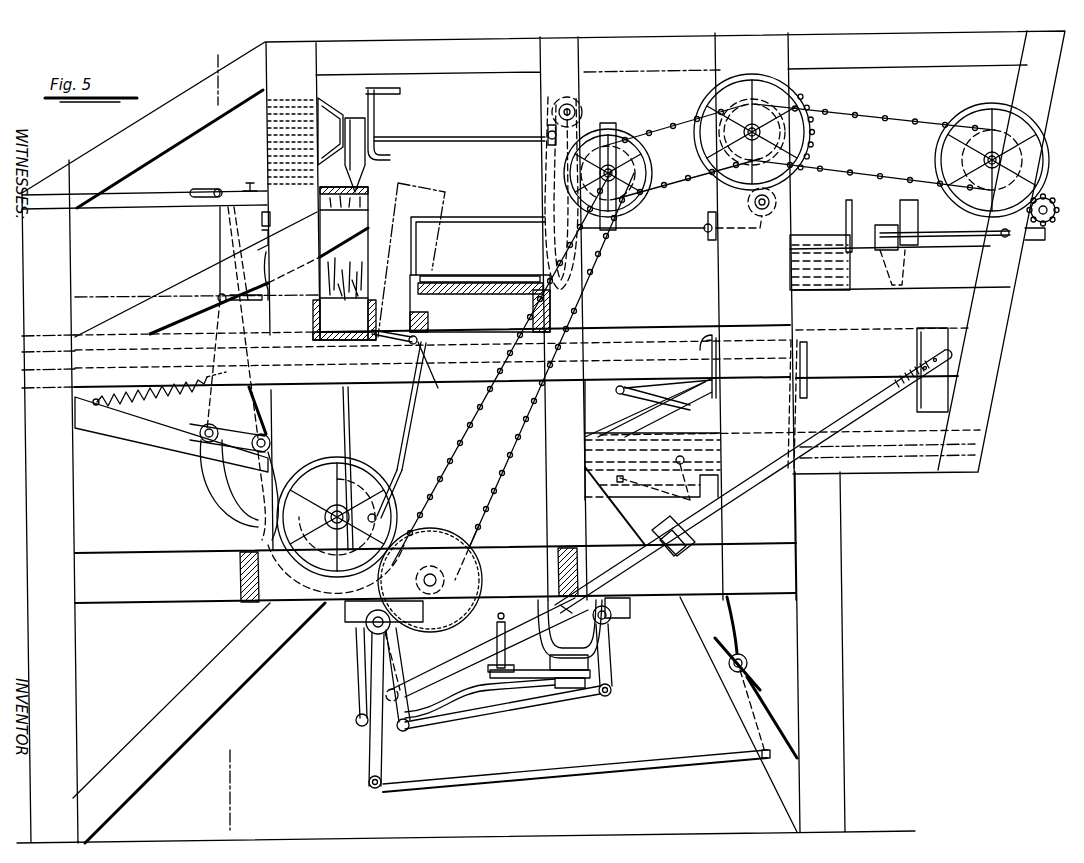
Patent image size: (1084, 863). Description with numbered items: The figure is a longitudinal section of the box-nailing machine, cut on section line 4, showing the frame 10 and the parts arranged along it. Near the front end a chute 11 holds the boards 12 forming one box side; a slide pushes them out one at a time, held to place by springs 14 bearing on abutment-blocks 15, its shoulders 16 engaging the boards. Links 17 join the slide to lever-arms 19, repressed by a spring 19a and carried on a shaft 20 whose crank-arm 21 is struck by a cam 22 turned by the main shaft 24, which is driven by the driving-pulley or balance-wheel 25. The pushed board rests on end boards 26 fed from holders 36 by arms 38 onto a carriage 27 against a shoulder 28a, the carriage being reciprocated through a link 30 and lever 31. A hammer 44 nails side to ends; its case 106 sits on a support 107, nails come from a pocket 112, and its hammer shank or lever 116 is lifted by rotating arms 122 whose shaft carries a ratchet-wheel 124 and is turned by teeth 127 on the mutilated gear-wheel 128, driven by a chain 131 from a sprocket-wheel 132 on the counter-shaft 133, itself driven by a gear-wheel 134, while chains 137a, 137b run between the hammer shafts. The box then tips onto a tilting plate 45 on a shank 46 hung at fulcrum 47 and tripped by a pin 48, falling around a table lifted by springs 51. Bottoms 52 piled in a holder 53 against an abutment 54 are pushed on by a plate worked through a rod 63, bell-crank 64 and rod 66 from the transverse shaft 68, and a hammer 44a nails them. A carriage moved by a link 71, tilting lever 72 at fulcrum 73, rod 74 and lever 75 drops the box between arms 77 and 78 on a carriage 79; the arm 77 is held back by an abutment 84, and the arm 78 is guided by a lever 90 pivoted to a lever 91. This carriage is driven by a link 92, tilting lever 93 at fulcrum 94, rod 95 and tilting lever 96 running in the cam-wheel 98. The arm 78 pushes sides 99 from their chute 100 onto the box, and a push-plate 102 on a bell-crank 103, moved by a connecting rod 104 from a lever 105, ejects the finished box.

The section line 4 is at (223, 440).
The frame 10 is at (22, 478).
The chute 11 is at (262, 116).
The boards 12 is at (266, 150).
The springs 14 is at (262, 236).
The abutment-blocks 15 is at (262, 216).
The shoulders 16 is at (252, 178).
The links 17 is at (204, 189).
The lever-arms 19 is at (218, 230).
The spring 19a is at (148, 404).
The shaft 20 is at (200, 436).
The crank-arm 21 is at (212, 498).
The cam 22 is at (270, 444).
The main shaft 24 is at (345, 505).
The driving-pulley or balance-wheel 25 is at (306, 580).
The end boards 26 is at (392, 250).
The carriage 27 is at (344, 263).
The chute 28a is at (160, 305).
The link 30 is at (197, 284).
The lever 31 is at (262, 412).
The holders 36 is at (313, 320).
The arms 38 is at (350, 418).
The hammer 44 is at (375, 130).
The hammer 44a is at (546, 196).
The tilting plate 45 is at (394, 326).
The shank 46 is at (412, 414).
The fulcrum 47 is at (432, 378).
The pin 48 is at (395, 472).
The springs 51 is at (480, 311).
The bottoms 52 is at (490, 276).
The holder 53 is at (470, 294).
The abutment 54 is at (478, 246).
The rod 63 is at (506, 636).
The bell-crank 64 is at (570, 690).
The rod 66 is at (473, 706).
The transverse shaft 68 is at (368, 630).
The link 71 is at (497, 385).
The tilting lever 72 is at (530, 444).
The fulcrum 73 is at (612, 620).
The rod 74 is at (523, 712).
The lever 75 is at (405, 668).
The arm 77 is at (806, 345).
The arm 78 is at (718, 375).
The carriage 79 is at (622, 400).
The abutment 84 is at (792, 340).
The lever 90 is at (655, 395).
The lever 91 is at (655, 409).
The link 92 is at (672, 462).
The tilting lever 93 is at (735, 622).
The fulcrum 94 is at (746, 660).
The rod 95 is at (640, 762).
The tilting lever 96 is at (368, 745).
The cam-wheel 98 is at (378, 515).
The sides 99 is at (820, 253).
The chute 100 is at (835, 226).
The push-plate 102 is at (933, 370).
The bell-crank 103 is at (900, 408).
The connecting rod 104 is at (725, 500).
The lever 105 is at (400, 688).
The case 106 is at (355, 180).
The support 107 is at (325, 112).
The pocket 112 is at (398, 92).
The hammer shank or lever 116 is at (495, 143).
The arms 122 is at (578, 112).
The ratchet-wheel 124 is at (1053, 217).
The teeth 127 is at (812, 136).
The mutilated gear-wheel 128 is at (700, 100).
The chain 131 is at (596, 258).
The sprocket-wheel 132 is at (430, 580).
The counter-shaft 133 is at (437, 578).
The gear-wheel 134 is at (476, 534).
The chain 137a is at (730, 172).
The chain and wheel 137b is at (915, 120).